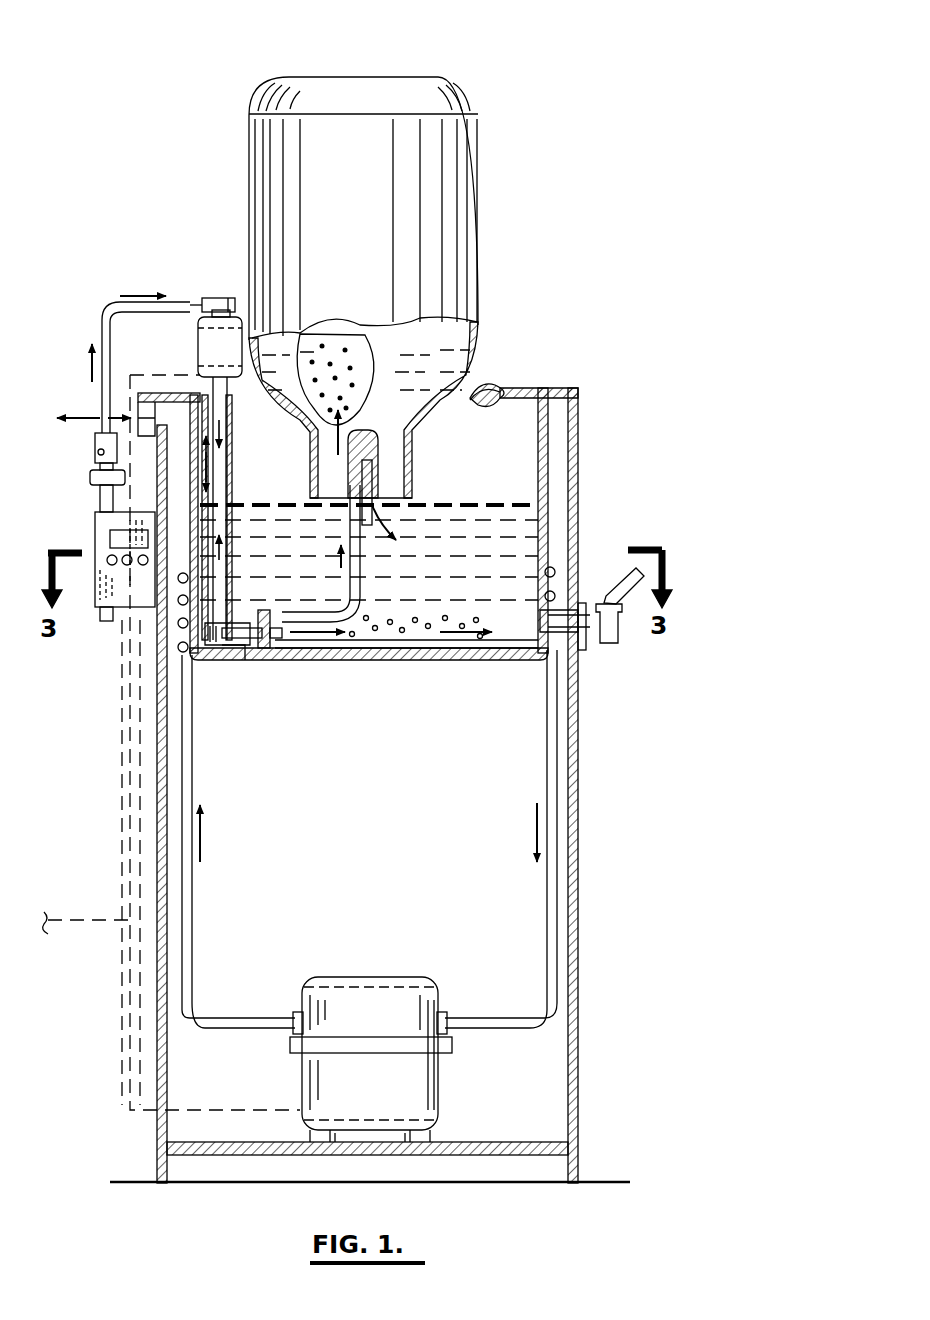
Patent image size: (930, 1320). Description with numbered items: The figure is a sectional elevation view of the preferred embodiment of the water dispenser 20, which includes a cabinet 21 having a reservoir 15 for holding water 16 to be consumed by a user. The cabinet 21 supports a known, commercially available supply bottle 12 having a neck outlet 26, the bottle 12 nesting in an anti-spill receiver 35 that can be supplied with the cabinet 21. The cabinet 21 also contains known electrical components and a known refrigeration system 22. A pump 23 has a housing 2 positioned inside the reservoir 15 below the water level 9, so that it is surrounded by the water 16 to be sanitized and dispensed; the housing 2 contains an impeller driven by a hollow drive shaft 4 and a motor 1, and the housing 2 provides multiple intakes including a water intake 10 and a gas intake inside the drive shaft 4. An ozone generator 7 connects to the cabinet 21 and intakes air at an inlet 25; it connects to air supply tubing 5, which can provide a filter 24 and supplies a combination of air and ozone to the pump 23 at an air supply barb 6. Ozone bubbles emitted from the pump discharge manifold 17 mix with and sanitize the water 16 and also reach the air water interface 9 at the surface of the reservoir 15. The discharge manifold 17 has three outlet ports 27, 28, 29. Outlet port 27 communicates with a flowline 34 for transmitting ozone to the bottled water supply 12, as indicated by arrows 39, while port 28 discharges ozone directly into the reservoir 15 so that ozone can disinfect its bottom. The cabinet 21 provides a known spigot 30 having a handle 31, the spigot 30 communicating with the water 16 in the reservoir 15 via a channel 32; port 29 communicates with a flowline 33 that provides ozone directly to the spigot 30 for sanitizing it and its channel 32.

The motor 1 is at (198, 348).
The housing 2 is at (222, 608).
The hollow drive shaft 4 is at (222, 438).
The air supply tubing 5 is at (102, 318).
The air supply barb 6 is at (197, 305).
The ozone generator 7 is at (95, 535).
The air water interface 9 is at (450, 503).
The water intake 10 is at (228, 652).
The supply bottle 12 is at (383, 96).
The reservoir 15 is at (548, 465).
The water 16 is at (500, 525).
The pump discharge manifold 17 is at (246, 660).
The water dispenser 20 is at (532, 78).
The cabinet 21 is at (580, 906).
The refrigeration system 22 is at (356, 972).
The pump 23 is at (240, 300).
The filter 24 is at (95, 475).
The inlet 25 is at (100, 618).
The neck outlet 26 is at (325, 340).
The outlet port 27 is at (268, 615).
The outlet port 28 is at (276, 628).
The outlet port 29 is at (272, 656).
The spigot 30 is at (620, 646).
The handle 31 is at (616, 598).
The channel 32 is at (560, 605).
The flowline 33 is at (400, 650).
The flowline 34 is at (362, 612).
The anti-spill receiver 35 is at (498, 390).
The arrows 39 is at (393, 445).